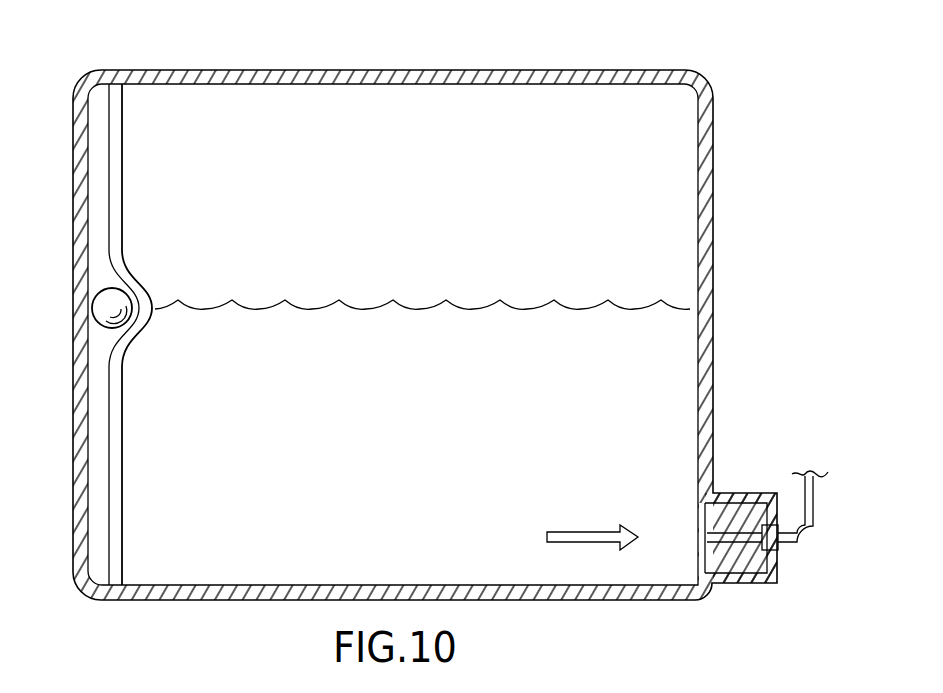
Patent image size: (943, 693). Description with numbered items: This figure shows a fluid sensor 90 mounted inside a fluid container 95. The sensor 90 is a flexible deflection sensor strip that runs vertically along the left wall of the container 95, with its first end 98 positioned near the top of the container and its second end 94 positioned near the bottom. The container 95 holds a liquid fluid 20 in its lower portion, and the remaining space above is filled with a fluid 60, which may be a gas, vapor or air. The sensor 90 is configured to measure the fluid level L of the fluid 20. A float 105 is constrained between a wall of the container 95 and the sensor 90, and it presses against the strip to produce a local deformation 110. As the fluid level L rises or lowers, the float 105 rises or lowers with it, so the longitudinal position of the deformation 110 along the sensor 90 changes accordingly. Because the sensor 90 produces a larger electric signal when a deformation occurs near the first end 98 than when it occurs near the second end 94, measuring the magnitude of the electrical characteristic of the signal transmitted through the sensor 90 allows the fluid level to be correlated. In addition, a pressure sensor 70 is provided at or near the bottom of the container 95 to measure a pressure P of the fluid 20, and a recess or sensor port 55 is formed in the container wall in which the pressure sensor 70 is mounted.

The fluid container 95 is at (398, 70).
The first end 98 is at (131, 106).
The second end 94 is at (133, 569).
The fluid sensor 90 is at (124, 427).
The deformation 110 is at (148, 283).
The float 105 is at (131, 347).
The fluid 60 is at (383, 204).
The fluid 20 is at (383, 452).
The pressure sensor 70 is at (698, 520).
The sensor port 55 is at (747, 587).
The fluid level L is at (530, 308).
The pressure P is at (592, 526).